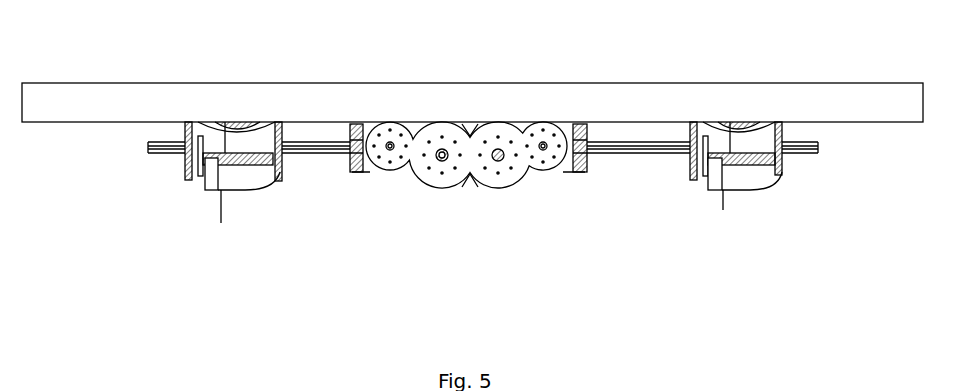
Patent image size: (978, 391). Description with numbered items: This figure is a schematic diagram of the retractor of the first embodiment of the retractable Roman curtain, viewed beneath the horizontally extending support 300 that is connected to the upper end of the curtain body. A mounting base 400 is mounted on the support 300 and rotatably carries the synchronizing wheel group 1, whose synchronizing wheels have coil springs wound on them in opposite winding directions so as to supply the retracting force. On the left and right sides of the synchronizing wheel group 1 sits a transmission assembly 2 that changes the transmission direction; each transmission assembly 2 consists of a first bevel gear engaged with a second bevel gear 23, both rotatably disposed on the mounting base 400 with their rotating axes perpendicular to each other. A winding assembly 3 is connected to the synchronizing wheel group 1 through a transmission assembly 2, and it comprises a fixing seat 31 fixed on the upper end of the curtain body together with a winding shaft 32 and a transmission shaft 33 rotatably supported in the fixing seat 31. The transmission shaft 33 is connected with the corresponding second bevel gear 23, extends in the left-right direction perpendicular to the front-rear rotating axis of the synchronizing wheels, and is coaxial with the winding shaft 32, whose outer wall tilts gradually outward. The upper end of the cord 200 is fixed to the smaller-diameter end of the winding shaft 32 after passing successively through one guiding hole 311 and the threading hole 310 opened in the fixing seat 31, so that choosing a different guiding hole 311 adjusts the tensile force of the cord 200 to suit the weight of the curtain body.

The support 300 is at (625, 103).
The mounting base 400 is at (438, 148).
The synchronizing wheel group 1 is at (468, 168).
The transmission assembly 2 is at (582, 187).
The second bevel gear 23 is at (347, 166).
The winding assembly 3 is at (767, 230).
The threading hole 310 is at (703, 183).
The guiding hole 311 is at (716, 192).
The fixing seat 31 is at (786, 172).
The winding shaft 32 is at (780, 188).
The transmission shaft 33 is at (822, 152).
The cord 200 is at (725, 204).